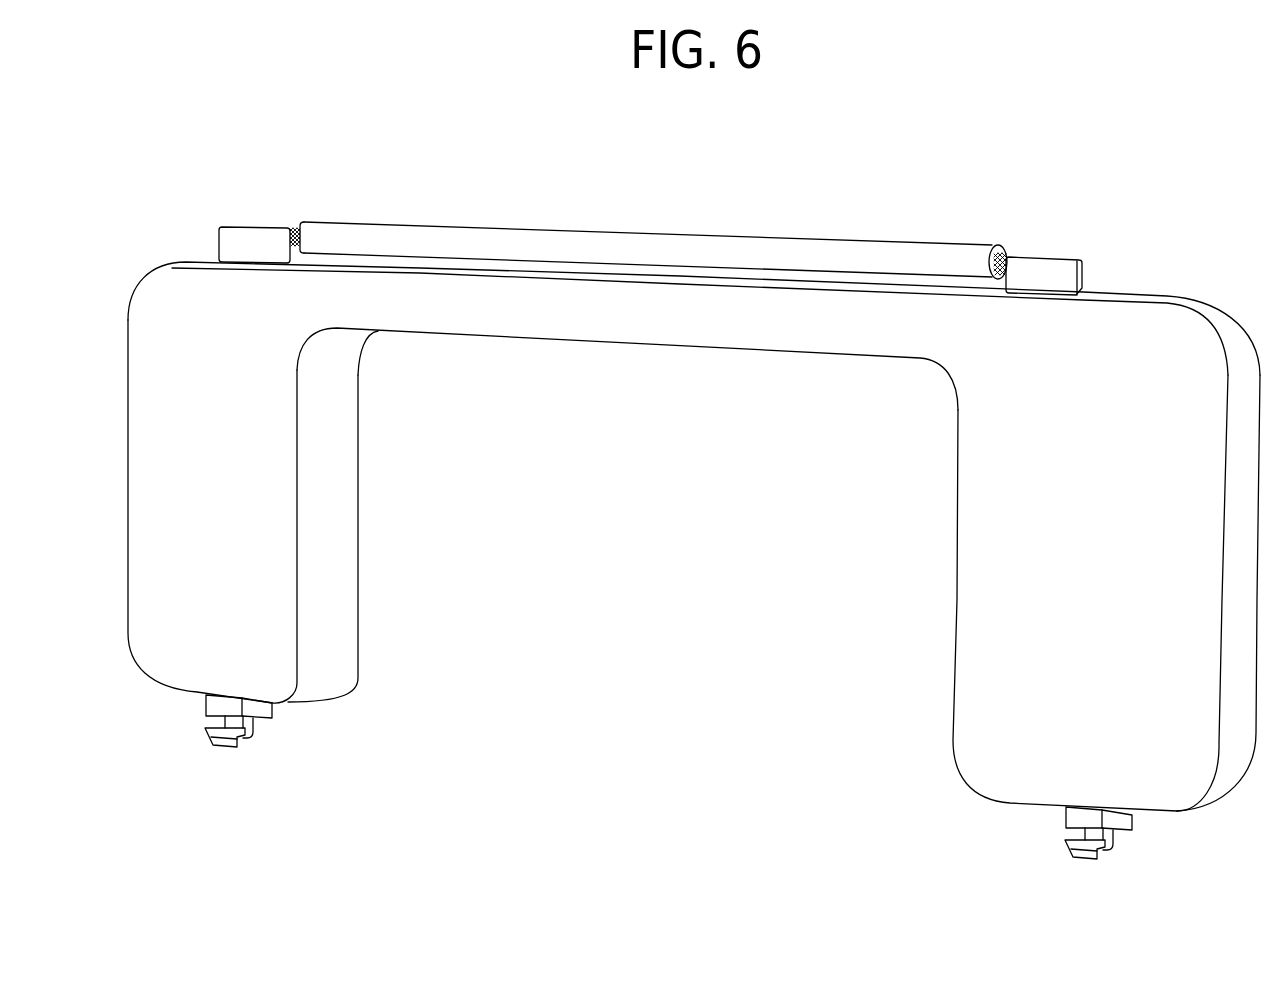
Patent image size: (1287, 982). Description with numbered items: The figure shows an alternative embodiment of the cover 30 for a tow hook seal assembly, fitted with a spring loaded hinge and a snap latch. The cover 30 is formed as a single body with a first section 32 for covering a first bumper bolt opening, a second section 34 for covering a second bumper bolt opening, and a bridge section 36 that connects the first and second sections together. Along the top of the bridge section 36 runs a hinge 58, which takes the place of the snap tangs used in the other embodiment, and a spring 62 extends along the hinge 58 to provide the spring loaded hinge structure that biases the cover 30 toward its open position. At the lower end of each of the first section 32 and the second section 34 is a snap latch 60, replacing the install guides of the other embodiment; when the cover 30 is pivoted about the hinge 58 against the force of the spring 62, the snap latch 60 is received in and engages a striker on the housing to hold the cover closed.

The cover 30 is at (670, 519).
The first section 32 is at (200, 547).
The second section 34 is at (1045, 633).
The bridge section 36 is at (615, 325).
The hinge 58 is at (937, 252).
The snap latch 60 is at (203, 730).
The spring 62 is at (1004, 252).